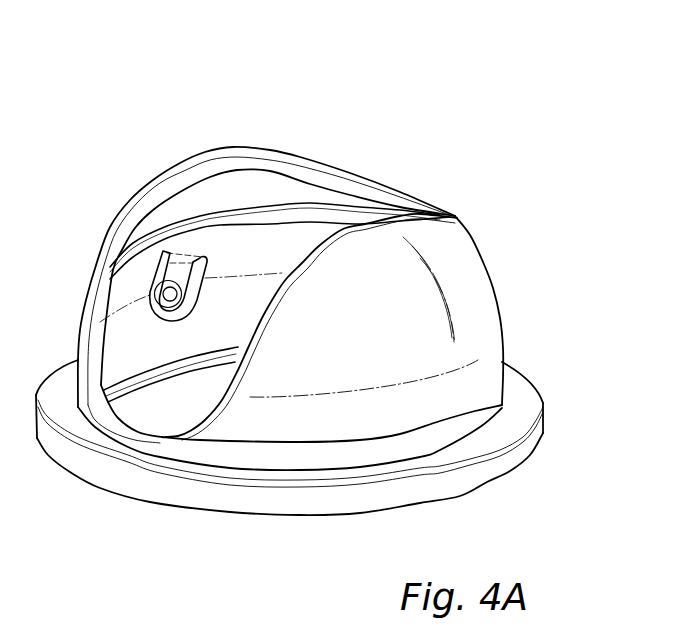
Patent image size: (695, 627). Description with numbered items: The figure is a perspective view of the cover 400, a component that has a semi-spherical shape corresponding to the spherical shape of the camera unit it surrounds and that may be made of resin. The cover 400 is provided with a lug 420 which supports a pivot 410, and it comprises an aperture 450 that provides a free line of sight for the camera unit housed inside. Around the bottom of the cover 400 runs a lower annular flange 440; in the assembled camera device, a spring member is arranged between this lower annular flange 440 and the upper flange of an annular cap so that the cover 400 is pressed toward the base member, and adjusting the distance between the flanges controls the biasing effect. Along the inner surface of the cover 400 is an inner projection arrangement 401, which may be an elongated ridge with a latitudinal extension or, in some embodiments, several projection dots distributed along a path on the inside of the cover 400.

The cover 400 is at (245, 90).
The inner projection arrangement 401 is at (302, 215).
The pivot 410 is at (170, 300).
The lug 420 is at (180, 264).
The lower annular flange 440 is at (515, 396).
The aperture 450 is at (176, 170).